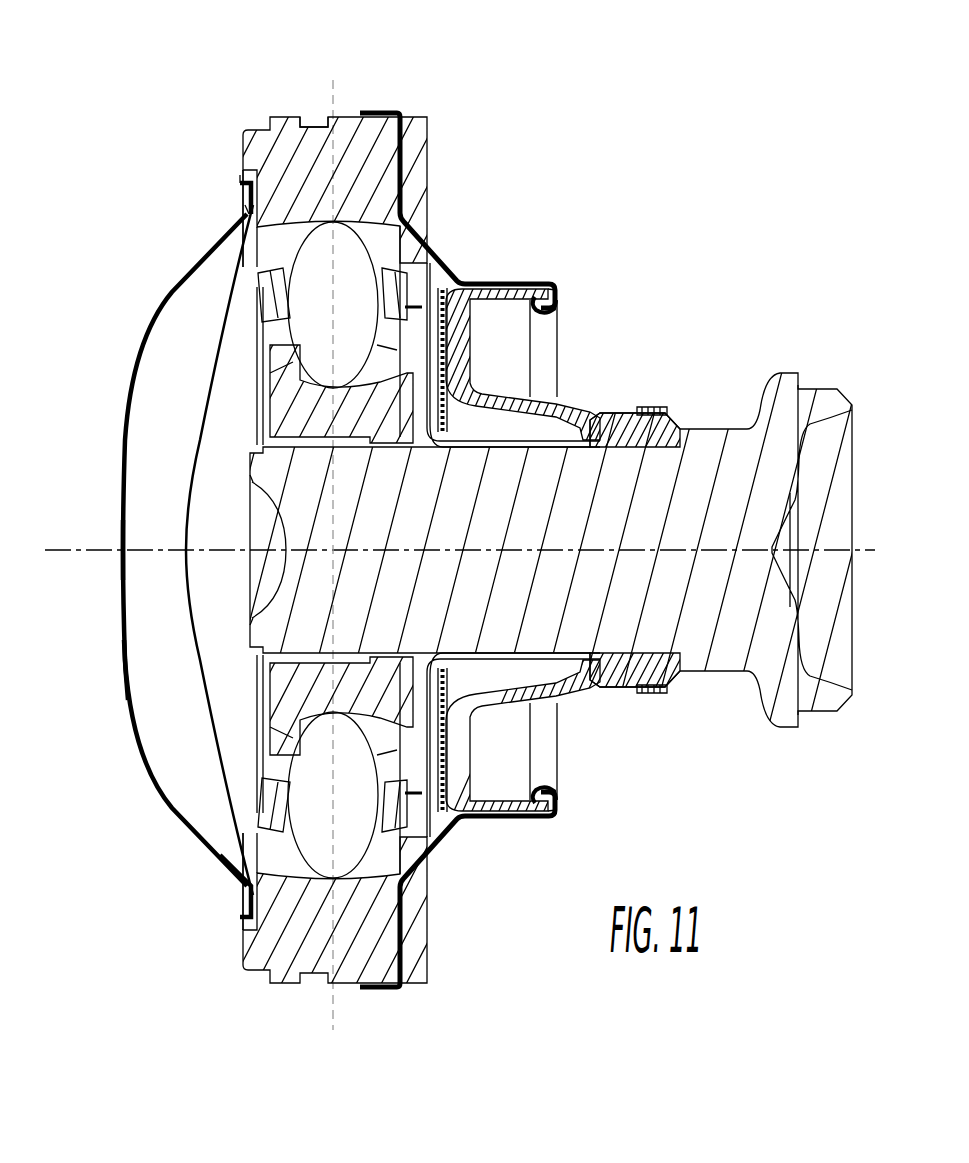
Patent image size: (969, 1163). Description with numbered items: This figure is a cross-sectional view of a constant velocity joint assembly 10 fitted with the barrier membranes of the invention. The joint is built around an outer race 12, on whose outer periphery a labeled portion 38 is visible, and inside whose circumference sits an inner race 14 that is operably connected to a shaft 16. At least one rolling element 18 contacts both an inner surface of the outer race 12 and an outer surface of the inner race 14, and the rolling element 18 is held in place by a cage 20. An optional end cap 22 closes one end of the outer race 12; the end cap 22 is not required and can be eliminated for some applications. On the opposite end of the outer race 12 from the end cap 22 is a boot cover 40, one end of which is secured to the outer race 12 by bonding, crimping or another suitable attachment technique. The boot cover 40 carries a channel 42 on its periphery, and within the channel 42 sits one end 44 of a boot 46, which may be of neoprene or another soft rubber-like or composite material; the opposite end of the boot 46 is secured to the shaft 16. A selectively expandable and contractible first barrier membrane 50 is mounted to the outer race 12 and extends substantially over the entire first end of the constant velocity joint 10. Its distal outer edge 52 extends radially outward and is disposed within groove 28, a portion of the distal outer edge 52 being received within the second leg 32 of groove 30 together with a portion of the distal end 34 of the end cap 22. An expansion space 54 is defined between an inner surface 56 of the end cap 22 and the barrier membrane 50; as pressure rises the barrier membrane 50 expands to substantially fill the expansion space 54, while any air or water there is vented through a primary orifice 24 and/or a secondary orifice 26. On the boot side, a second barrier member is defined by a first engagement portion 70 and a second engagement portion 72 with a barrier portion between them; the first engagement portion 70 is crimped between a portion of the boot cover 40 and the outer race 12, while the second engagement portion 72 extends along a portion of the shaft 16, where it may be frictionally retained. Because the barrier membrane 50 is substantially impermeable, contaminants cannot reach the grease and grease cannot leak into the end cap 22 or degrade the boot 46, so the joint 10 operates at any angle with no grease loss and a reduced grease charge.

The constant velocity joint 10 is at (550, 157).
The outer race 12 is at (297, 137).
The inner race 14 is at (447, 265).
The shaft 16 is at (708, 443).
The rolling element 18 is at (401, 190).
The cage 20 is at (350, 283).
The end cap 22 is at (132, 744).
The primary orifice 24 is at (122, 545).
The secondary orifice 26 is at (207, 843).
The groove 28 is at (250, 186).
The groove 30 is at (243, 182).
The second leg 32 is at (250, 170).
The distal end 34 is at (248, 203).
The ring notch 38 is at (323, 127).
The boot cover 40 is at (455, 290).
The channel 42 is at (562, 306).
The end of boot 44 is at (552, 287).
The boot 46 is at (518, 287).
The first barrier membrane 50 is at (190, 450).
The distal outer edge 52 is at (272, 873).
The expansion space 54 is at (170, 521).
The inner surface 56 is at (130, 690).
The first engagement portion 70 is at (417, 873).
The second engagement portion 72 is at (630, 440).